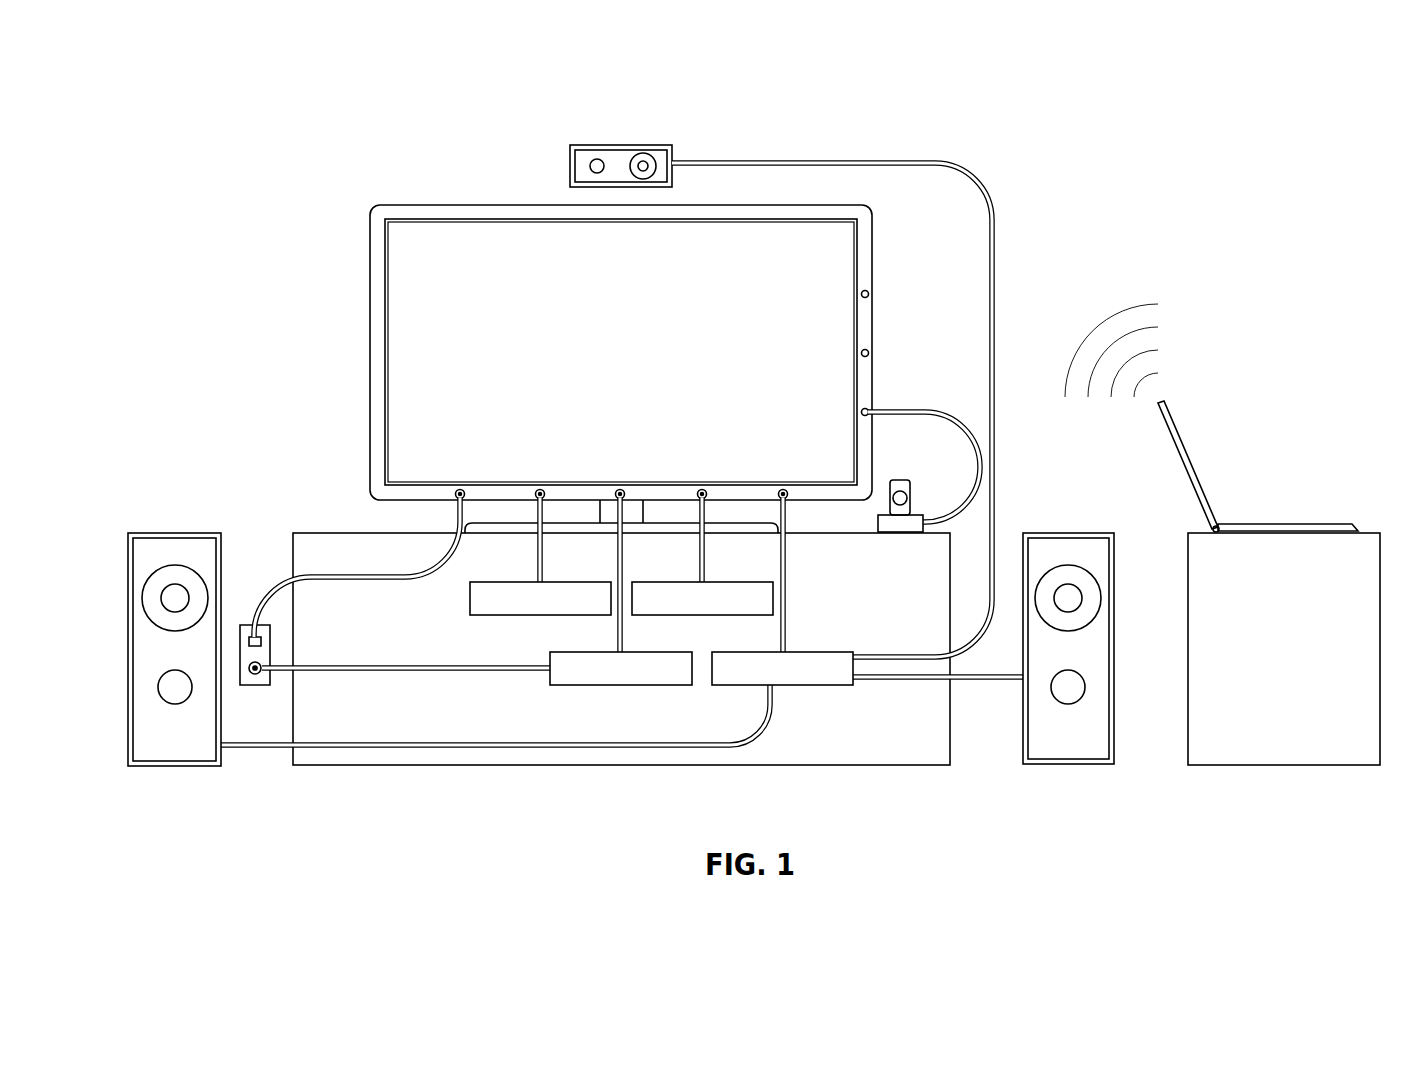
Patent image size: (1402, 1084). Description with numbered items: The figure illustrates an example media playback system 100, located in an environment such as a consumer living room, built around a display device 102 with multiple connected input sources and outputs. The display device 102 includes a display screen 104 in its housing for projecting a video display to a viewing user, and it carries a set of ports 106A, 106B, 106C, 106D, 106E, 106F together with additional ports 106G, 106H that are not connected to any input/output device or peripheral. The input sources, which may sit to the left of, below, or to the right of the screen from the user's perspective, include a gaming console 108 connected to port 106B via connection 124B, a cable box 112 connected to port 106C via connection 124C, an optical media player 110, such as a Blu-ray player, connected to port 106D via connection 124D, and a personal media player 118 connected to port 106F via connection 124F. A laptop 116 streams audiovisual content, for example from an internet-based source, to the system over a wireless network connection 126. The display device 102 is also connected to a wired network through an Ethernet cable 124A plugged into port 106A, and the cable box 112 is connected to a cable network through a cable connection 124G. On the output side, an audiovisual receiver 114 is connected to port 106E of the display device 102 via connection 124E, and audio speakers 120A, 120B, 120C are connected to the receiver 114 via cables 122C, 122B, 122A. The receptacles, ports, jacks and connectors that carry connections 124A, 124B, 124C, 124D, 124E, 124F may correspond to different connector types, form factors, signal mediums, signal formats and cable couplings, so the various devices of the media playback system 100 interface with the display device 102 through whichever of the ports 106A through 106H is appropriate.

The media playback system 100 is at (226, 178).
The display device 102 is at (697, 204).
The display screen 104 is at (409, 330).
The port 106A is at (460, 489).
The port 106B is at (540, 489).
The port 106C is at (620, 489).
The port 106D is at (702, 489).
The port 106E is at (783, 489).
The port 106F is at (861, 412).
The additional port 106G is at (869, 353).
The additional port 106H is at (869, 294).
The gaming console 108 is at (540, 615).
The optical media player 110 is at (702, 615).
The cable box 112 is at (620, 685).
The audiovisual (A/V) receiver 114 is at (783, 685).
The laptop 116 is at (1288, 527).
The personal media player 118 is at (905, 480).
The audio speaker 120A is at (175, 533).
The audio speaker 120B is at (1068, 533).
The audio speaker 120C is at (622, 146).
The cable 122A is at (893, 655).
The cable 122B is at (915, 681).
The cable 122C is at (472, 742).
The Ethernet cable 124A is at (383, 575).
The connection 124B is at (545, 555).
The connection 124C is at (625, 555).
The connection 124D is at (707, 555).
The connection 124E is at (788, 555).
The connection 124F is at (996, 468).
The cable connection 124G is at (403, 667).
The wireless network connection 126 is at (1113, 294).